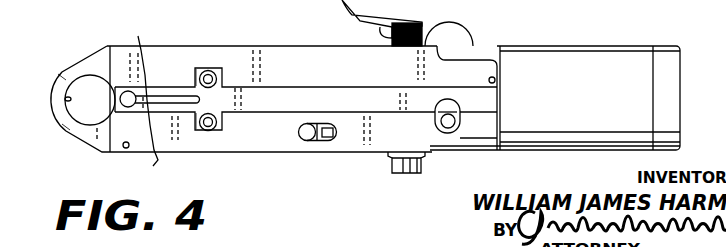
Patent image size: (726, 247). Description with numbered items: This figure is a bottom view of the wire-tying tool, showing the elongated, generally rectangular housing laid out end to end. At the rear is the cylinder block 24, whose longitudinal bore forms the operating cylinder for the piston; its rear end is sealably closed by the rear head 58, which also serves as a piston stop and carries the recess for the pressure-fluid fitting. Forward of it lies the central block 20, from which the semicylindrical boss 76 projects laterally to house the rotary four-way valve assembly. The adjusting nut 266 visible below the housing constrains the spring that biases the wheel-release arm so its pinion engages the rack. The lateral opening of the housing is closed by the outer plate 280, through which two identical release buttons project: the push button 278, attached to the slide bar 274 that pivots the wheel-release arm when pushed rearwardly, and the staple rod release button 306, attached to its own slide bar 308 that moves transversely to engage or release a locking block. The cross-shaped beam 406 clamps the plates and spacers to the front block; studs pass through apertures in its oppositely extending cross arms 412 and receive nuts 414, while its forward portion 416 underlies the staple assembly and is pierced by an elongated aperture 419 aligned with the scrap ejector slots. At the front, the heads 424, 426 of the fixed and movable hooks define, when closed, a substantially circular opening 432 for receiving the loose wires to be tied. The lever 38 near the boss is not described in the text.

The central block 20 is at (488, 56).
The cylinder block 24 is at (570, 57).
The rear head 58 is at (675, 58).
The semicylindrical boss 76 is at (464, 24).
The lever arm 38 is at (370, 19).
The slide bar 308 is at (461, 118).
The staple rod release button 306 is at (448, 128).
The adjusting nut 266 is at (410, 173).
The push button 278 is at (314, 141).
The slide bar 274 is at (328, 141).
The cross-shaped beam 406 is at (315, 97).
The cross arms 412 is at (206, 75).
The nuts 414 is at (200, 77).
The outer plate 280 is at (166, 50).
The forward portion 416 is at (129, 76).
The elongated aperture 419 is at (140, 150).
The head 426 is at (62, 77).
The circular opening 432 is at (65, 100).
The head 424 is at (67, 127).